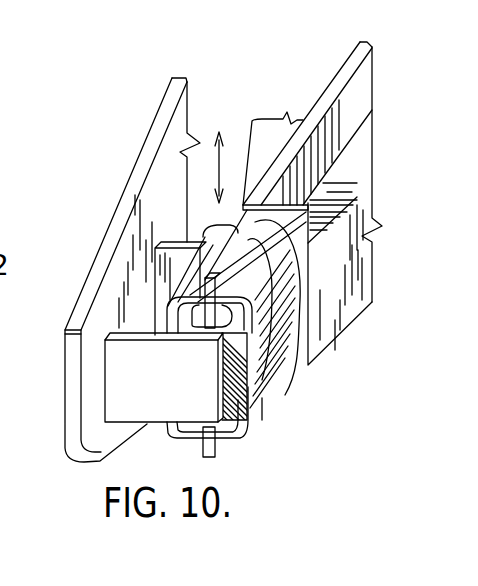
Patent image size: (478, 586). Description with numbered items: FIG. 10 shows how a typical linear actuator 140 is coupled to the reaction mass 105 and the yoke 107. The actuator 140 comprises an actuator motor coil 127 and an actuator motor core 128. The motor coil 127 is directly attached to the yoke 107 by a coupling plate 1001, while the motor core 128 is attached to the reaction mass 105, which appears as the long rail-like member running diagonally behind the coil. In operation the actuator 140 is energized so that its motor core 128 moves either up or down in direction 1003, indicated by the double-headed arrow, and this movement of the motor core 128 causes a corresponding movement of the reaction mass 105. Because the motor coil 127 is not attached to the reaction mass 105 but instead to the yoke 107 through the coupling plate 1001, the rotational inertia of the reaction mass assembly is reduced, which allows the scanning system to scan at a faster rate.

The reaction mass 105 is at (345, 115).
The yoke 107 is at (66, 392).
The actuator motor coil 127 is at (237, 380).
The actuator motor core 128 is at (218, 311).
The actuator 140 is at (278, 429).
The coupling plate 1001 is at (190, 401).
The direction 1003 is at (219, 165).